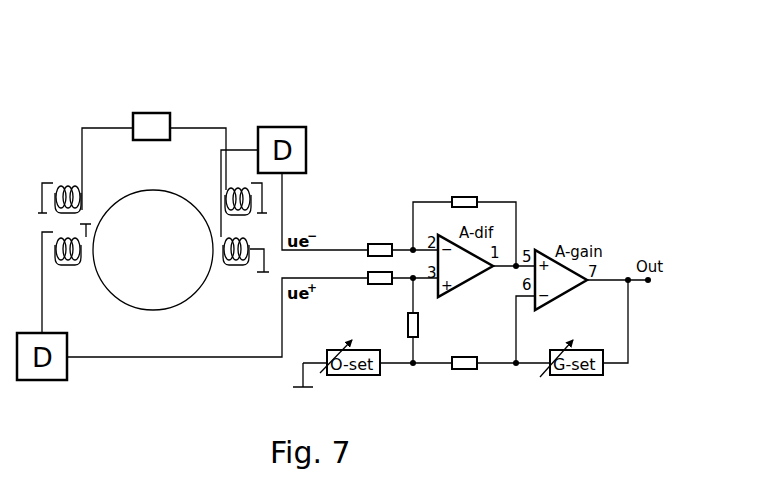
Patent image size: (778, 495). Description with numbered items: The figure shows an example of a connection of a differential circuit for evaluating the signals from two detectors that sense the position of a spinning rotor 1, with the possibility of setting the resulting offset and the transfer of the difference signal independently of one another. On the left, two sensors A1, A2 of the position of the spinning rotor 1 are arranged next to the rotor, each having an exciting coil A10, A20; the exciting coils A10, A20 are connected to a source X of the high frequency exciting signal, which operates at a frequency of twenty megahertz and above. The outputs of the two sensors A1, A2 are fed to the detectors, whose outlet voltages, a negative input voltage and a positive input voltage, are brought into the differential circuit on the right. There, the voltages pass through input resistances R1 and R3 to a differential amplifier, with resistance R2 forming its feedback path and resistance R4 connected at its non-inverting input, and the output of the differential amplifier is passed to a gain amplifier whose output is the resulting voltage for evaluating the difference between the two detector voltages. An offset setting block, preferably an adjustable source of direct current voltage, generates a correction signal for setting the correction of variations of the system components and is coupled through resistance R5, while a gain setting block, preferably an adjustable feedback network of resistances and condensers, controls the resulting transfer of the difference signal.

The spinning rotor 1 is at (153, 310).
The source of the high frequency exciting signal X is at (150, 118).
The exciting coil A10 is at (63, 186).
The exciting coil A20 is at (238, 186).
The sensor of the position of the spinning rotor A1 is at (72, 270).
The sensor of the position of the spinning rotor A2 is at (235, 272).
The resistor R1 is at (380, 243).
The resistor R2 is at (464, 193).
The resistor R3 is at (380, 289).
The resistor R4 is at (425, 325).
The resistor R5 is at (464, 354).